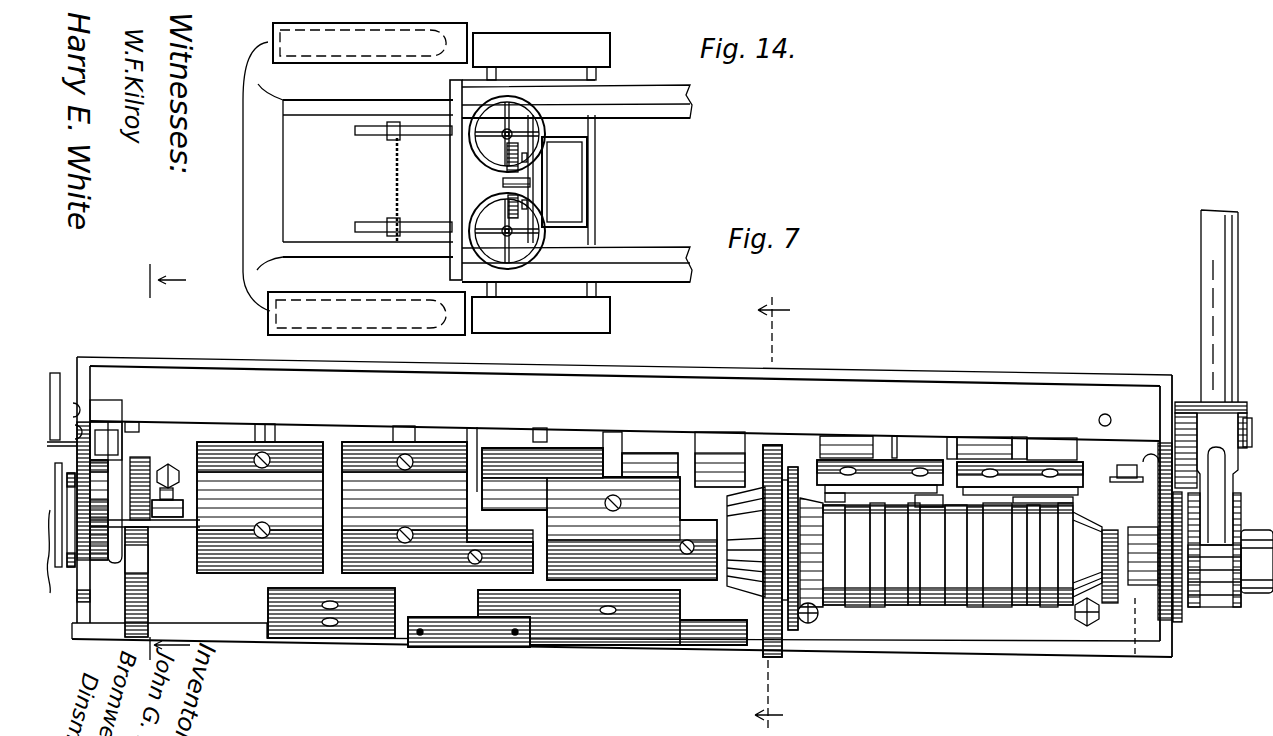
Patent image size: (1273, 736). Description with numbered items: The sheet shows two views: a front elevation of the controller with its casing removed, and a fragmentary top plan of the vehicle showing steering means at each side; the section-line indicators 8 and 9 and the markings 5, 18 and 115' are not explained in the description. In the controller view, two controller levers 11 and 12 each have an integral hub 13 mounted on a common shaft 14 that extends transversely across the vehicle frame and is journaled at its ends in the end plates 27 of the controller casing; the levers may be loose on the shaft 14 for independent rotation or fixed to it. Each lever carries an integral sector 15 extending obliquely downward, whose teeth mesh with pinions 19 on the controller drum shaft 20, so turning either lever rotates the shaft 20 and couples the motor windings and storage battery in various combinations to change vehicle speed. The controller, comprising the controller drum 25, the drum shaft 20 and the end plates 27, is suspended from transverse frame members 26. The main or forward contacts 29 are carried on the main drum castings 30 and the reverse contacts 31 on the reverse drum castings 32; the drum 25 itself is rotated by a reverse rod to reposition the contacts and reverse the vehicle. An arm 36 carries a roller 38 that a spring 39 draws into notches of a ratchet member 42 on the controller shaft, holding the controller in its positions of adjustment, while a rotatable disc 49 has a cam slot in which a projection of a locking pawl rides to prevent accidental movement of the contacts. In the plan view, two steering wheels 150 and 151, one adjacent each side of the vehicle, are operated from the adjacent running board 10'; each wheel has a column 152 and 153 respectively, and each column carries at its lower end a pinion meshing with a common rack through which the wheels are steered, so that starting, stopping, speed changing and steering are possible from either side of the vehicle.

In FIG. 14, the clamp pad 5 is at (320, 47).
In FIG. 14, the running board 10' is at (569, 196).
In FIG. 14, the frame rail 115' is at (577, 183).
In FIG. 14, the steering wheel 150 is at (533, 110).
In FIG. 14, the steering wheel 151 is at (528, 258).
In FIG. 14, the column 152 is at (439, 140).
In FIG. 14, the column 153 is at (436, 226).
In FIG. 7, the section line 8 is at (176, 468).
In FIG. 7, the section line 9 is at (782, 513).
In FIG. 7, the controller lever 11 is at (96, 421).
In FIG. 7, the controller lever 12 is at (1214, 272).
In FIG. 7, the hub 13 is at (95, 402).
In FIG. 7, the shaft 14 is at (76, 372).
In FIG. 7, the sector 15 is at (1246, 528).
In FIG. 7, the bearing block 18 is at (66, 578).
In FIG. 7, the pinion 19 is at (1262, 598).
In FIG. 7, the controller drum shaft 20 is at (1137, 650).
In FIG. 7, the controller drum 25 is at (660, 648).
In FIG. 7, the transverse frame member 26 is at (552, 372).
In FIG. 7, the end plate 27 is at (76, 398).
In FIG. 7, the main or forward contact 29 is at (654, 450).
In FIG. 7, the main drum casting 30 is at (466, 455).
In FIG. 7, the reverse contact 31 is at (940, 458).
In FIG. 7, the reverse drum casting 32 is at (997, 612).
In FIG. 7, the arm 36 is at (125, 535).
In FIG. 7, the roller 38 is at (128, 565).
In FIG. 7, the spring 39 is at (122, 458).
In FIG. 7, the ratchet member 42 is at (162, 596).
In FIG. 7, the rotatable disc 49 is at (770, 444).